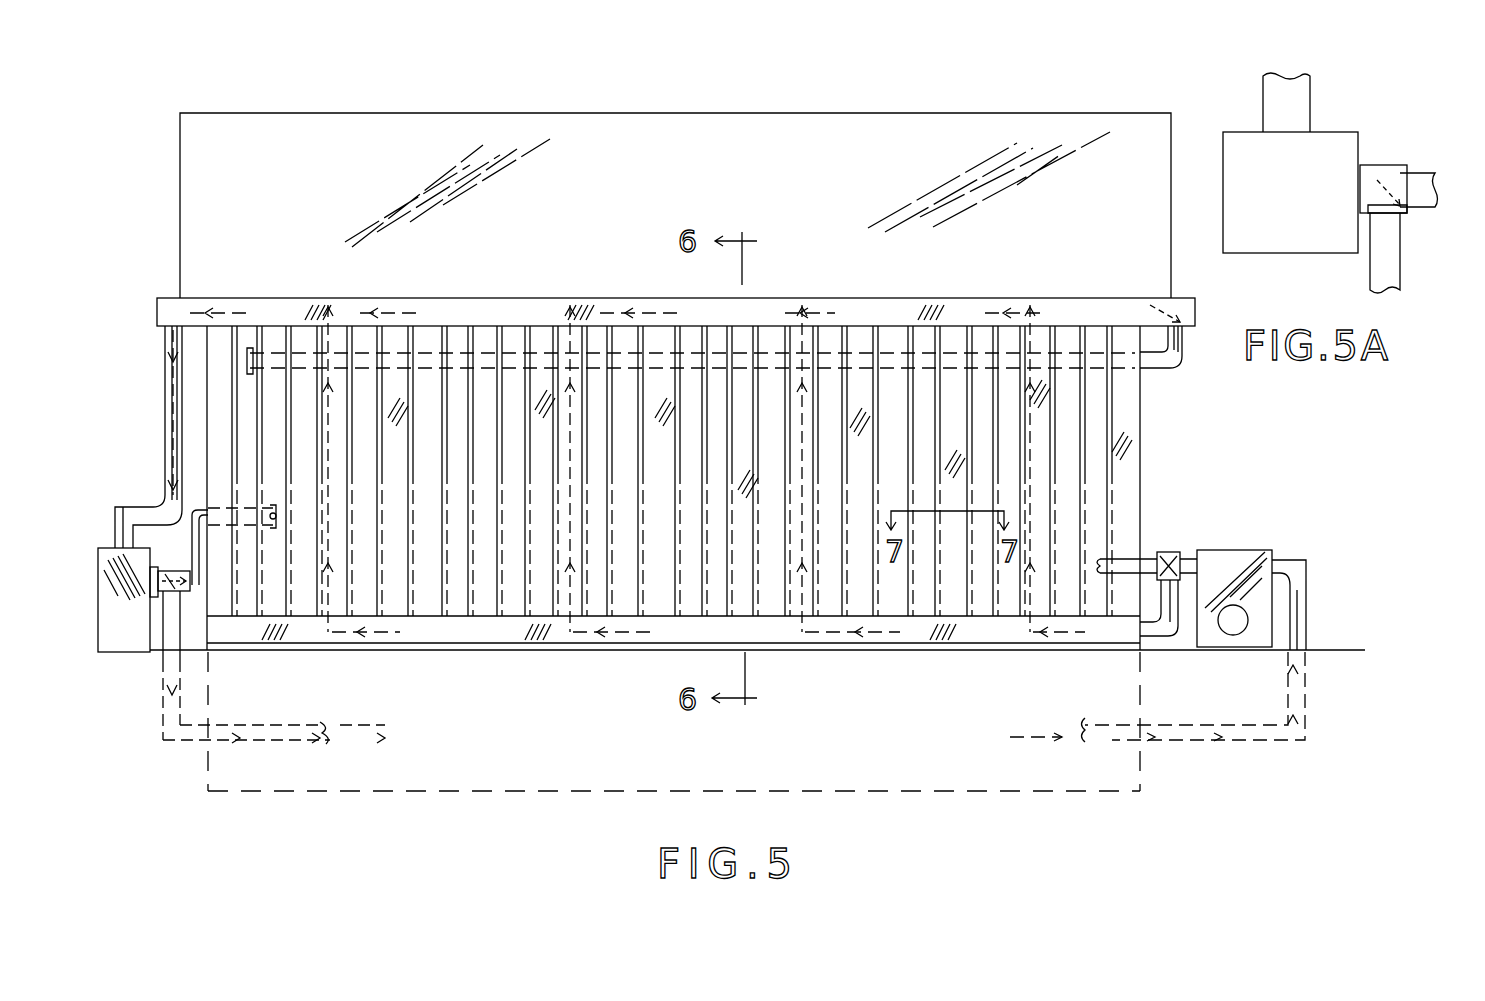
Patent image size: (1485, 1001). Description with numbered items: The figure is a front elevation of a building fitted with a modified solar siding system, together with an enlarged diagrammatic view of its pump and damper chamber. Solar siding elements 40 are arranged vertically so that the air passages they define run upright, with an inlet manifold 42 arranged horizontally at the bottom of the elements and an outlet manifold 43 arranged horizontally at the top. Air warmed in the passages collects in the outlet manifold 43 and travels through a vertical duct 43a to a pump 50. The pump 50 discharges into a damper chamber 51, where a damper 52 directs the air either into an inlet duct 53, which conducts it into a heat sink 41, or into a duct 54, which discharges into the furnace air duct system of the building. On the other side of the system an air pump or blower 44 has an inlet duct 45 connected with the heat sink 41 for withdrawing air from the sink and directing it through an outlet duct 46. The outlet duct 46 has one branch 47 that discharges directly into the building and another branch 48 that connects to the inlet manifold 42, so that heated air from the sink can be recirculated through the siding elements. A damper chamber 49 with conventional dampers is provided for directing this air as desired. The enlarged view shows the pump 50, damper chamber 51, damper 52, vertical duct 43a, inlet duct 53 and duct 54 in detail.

In FIG. 5, the solar siding elements 40 is at (272, 350).
In FIG. 5, the heat sink 41 is at (660, 716).
In FIG. 5, the inlet manifold 42 is at (500, 633).
In FIG. 5, the outlet manifold 43 is at (483, 322).
In FIG. 5, the vertical duct 43a is at (170, 418).
In FIG. 5A, the vertical duct 43a is at (1310, 105).
In FIG. 5, the air pump or blower 44 is at (1243, 553).
In FIG. 5, the inlet duct 45 is at (1218, 742).
In FIG. 5, the outlet duct 46 is at (1187, 562).
In FIG. 5, the branch 47 is at (1143, 560).
In FIG. 5, the branch 48 is at (1158, 640).
In FIG. 5, the damper chamber 49 is at (1168, 552).
In FIG. 5, the pump 50 is at (113, 552).
In FIG. 5A, the pump 50 is at (1300, 255).
In FIG. 5, the damper chamber 51 is at (202, 593).
In FIG. 5A, the damper chamber 51 is at (1370, 153).
In FIG. 5, the damper 52 is at (163, 597).
In FIG. 5A, the damper 52 is at (1387, 213).
In FIG. 5, the inlet duct 53 is at (180, 743).
In FIG. 5A, the inlet duct 53 is at (1390, 267).
In FIG. 5, the duct 54 is at (195, 497).
In FIG. 5A, the duct 54 is at (1410, 167).